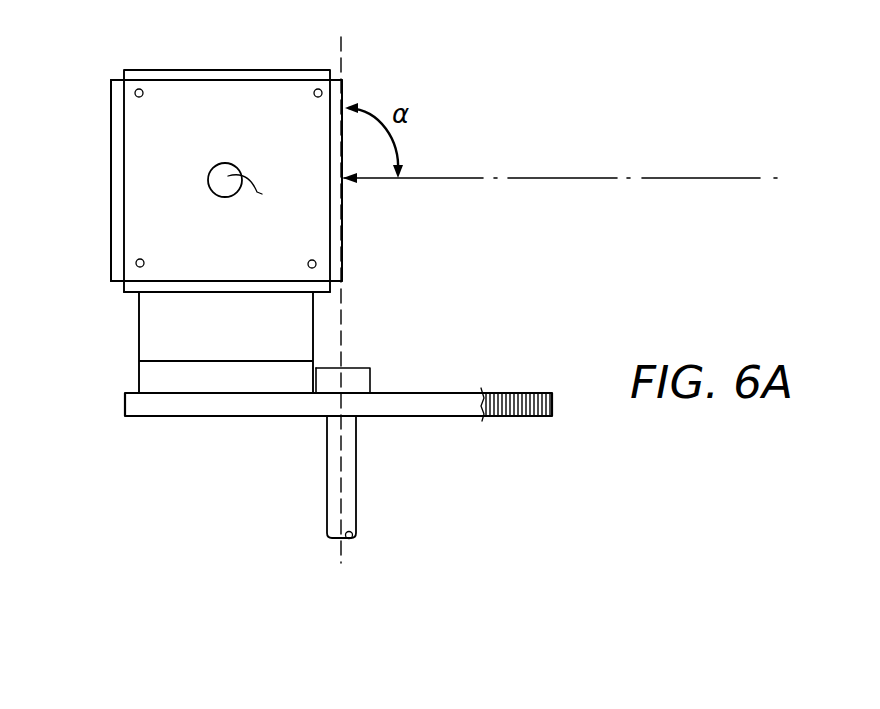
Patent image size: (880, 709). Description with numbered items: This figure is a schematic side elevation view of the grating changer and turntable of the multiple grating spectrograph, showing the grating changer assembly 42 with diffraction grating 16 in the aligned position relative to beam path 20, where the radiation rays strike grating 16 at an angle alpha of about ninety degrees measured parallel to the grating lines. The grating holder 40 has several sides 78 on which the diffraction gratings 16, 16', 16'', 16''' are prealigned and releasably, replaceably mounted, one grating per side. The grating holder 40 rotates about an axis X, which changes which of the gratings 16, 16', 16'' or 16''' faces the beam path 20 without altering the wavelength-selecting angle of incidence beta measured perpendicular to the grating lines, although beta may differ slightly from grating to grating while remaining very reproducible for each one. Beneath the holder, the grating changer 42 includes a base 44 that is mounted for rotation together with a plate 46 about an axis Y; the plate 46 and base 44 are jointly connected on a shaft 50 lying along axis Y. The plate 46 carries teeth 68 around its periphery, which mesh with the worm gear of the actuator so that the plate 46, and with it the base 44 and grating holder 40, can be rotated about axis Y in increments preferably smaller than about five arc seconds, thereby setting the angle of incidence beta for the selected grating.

The diffraction grating 16 is at (256, 180).
The diffraction grating 16' is at (227, 154).
The diffraction grating 16'' is at (80, 180).
The diffraction grating 16''' is at (227, 316).
The beam path 20 is at (453, 177).
The grating holder 40 is at (148, 193).
The grating changer assembly 42 is at (169, 50).
The base 44 is at (151, 372).
The plate 46 is at (124, 400).
The shaft 50 is at (353, 461).
The teeth 68 is at (520, 418).
The sides 78 is at (177, 78).